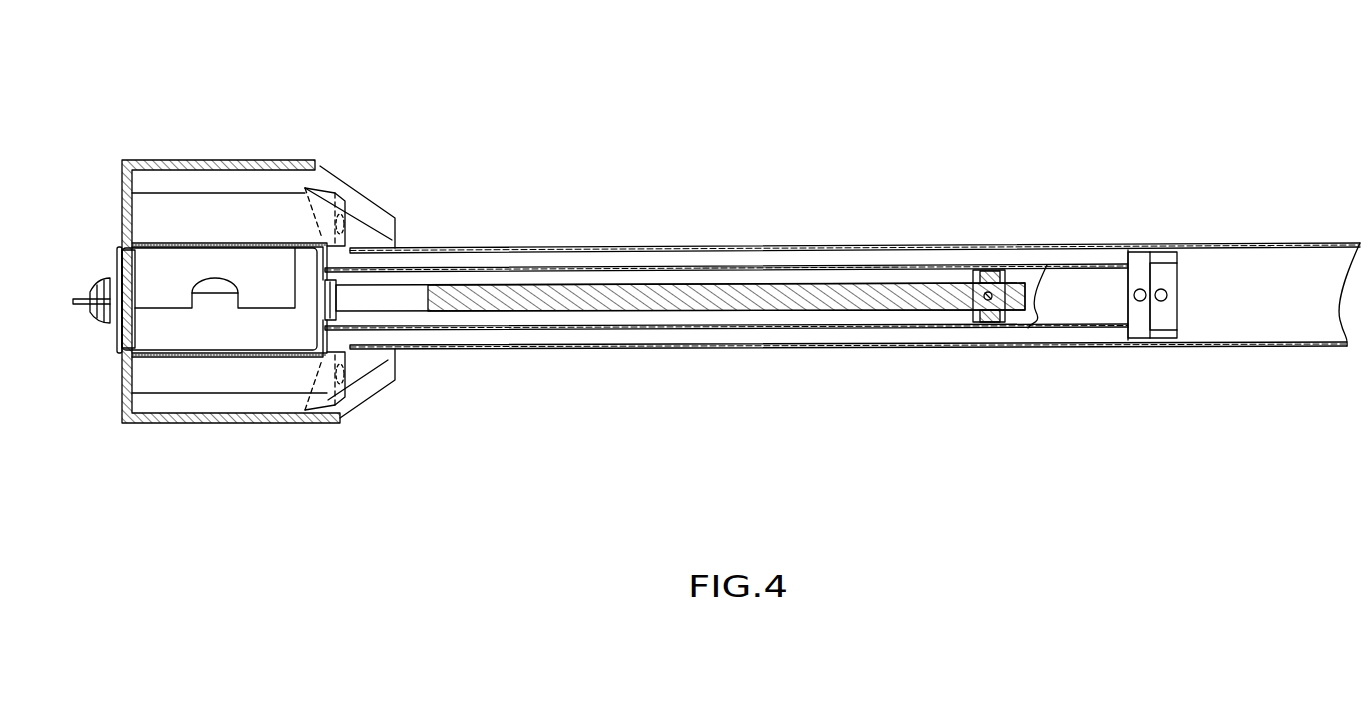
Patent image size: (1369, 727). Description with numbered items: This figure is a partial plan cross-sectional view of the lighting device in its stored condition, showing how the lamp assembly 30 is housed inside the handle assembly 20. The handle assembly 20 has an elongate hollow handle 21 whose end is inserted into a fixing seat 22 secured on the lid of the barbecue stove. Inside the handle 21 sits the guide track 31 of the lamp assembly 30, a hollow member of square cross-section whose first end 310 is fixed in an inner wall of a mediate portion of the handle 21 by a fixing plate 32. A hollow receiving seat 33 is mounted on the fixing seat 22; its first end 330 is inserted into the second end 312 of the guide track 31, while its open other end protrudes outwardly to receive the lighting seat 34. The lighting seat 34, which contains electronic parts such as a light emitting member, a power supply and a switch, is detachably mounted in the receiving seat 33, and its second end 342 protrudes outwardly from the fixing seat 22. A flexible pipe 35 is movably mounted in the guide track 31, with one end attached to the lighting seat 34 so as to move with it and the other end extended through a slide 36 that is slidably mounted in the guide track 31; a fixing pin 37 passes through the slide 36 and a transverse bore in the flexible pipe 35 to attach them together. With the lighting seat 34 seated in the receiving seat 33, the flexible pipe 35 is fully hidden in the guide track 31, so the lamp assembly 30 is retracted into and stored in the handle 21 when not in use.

The handle assembly 20 is at (528, 246).
The handle 21 is at (580, 247).
The fixing seat 22 is at (193, 160).
The lamp assembly 30 is at (735, 264).
The guide track 31 is at (783, 268).
The fixing plate 32 is at (1157, 282).
The receiving seat 33 is at (228, 240).
The lighting seat 34 is at (160, 267).
The flexible pipe 35 is at (853, 298).
The slide 36 is at (985, 270).
The fixing pin 37 is at (981, 304).
The first end of guide track 310 is at (1090, 305).
The second end of guide track 312 is at (350, 267).
The first end of receiving seat 330 is at (372, 267).
The second end of lighting seat 342 is at (117, 325).